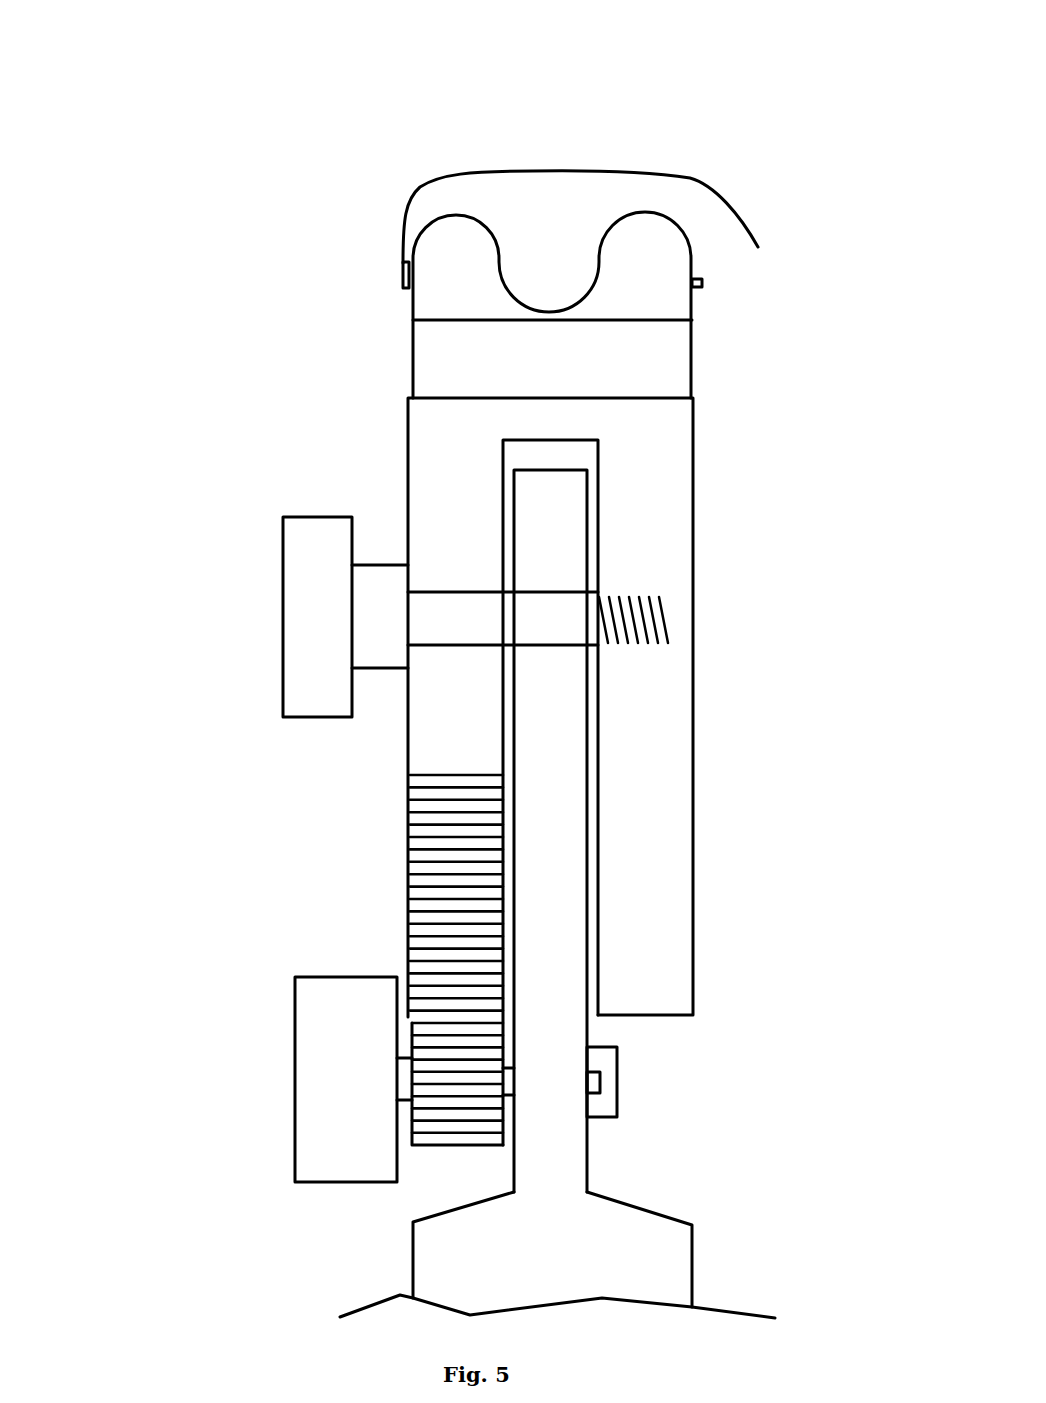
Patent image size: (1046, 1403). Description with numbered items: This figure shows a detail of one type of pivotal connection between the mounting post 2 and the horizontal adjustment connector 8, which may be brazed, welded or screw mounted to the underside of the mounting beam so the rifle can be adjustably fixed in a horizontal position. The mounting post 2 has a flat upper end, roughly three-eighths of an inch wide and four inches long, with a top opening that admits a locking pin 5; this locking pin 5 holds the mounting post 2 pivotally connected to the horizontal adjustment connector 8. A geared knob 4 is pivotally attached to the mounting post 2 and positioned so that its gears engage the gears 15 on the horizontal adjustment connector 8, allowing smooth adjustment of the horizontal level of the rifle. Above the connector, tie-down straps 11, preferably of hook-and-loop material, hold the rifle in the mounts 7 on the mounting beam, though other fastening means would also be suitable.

The mounting post 2 is at (413, 1240).
The geared knob 4 is at (295, 1093).
The locking pin 5 is at (283, 562).
The mounts 7 is at (403, 292).
The horizontal adjustment connector 8 is at (408, 447).
The tie-down straps 11 is at (715, 183).
The gears 15 is at (448, 905).